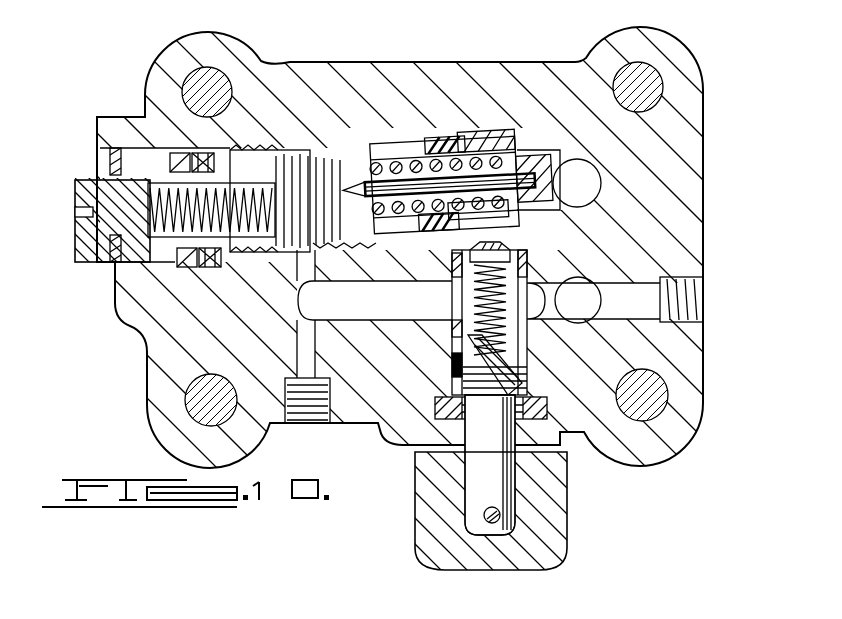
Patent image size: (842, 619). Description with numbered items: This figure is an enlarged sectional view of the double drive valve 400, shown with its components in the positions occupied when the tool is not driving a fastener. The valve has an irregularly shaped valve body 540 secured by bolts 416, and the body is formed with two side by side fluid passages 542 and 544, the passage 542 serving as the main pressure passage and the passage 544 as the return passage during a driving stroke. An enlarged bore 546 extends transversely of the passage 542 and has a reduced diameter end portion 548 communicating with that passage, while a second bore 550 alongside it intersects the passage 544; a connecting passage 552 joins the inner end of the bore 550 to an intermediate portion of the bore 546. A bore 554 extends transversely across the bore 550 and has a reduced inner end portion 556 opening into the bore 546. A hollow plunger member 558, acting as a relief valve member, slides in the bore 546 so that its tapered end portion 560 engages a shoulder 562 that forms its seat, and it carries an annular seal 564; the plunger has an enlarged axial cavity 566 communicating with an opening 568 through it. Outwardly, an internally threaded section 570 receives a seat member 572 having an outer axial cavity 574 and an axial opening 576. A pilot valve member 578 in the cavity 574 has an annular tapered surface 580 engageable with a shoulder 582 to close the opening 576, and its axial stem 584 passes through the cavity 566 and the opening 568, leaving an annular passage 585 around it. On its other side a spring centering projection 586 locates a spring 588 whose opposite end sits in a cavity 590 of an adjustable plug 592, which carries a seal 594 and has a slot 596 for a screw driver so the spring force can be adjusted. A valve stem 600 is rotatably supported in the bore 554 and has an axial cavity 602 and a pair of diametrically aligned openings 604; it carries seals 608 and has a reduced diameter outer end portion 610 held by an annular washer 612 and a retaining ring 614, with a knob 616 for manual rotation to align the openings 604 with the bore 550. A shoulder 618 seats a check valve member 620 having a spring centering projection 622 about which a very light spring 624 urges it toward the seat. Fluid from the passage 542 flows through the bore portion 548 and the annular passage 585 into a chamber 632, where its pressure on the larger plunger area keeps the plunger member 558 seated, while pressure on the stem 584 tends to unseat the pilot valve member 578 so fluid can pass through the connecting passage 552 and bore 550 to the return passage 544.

The double drive valve 400 is at (128, 374).
The bolts 416 is at (233, 60).
The valve body 540 is at (700, 190).
The fluid passage 542 is at (602, 183).
The fluid passage 544 is at (606, 297).
The enlarged bore 546 is at (415, 145).
The reduced diameter end portion 548 is at (552, 155).
The second bore 550 is at (630, 278).
The connecting passage 552 is at (298, 317).
The bore 554 is at (452, 343).
The reduced inner end portion 556 is at (523, 227).
The hollow plunger member 558 is at (483, 133).
The tapered end portion 560 is at (493, 135).
The shoulder 562 is at (542, 145).
The annular seal 564 is at (455, 147).
The enlarged axial cavity 566 is at (337, 270).
The opening 568 is at (577, 183).
The internally threaded section 570 is at (288, 165).
The seat member 572 is at (336, 185).
The outer axial cavity 574 is at (235, 270).
The axial opening 576 is at (385, 150).
The pilot valve member 578 is at (376, 172).
The annular tapered surface 580 is at (431, 240).
The shoulder 582 is at (313, 283).
The axial stem 584 is at (478, 210).
The annular passage 585 is at (633, 152).
The spring centering projection 586 is at (236, 250).
The spring 588 is at (190, 214).
The cavity 590 is at (234, 170).
The adjustable plug 592 is at (198, 152).
The seal 594 is at (125, 265).
The slot 596 is at (80, 205).
The valve stem 600 is at (527, 358).
The axial cavity 602 is at (578, 300).
The openings 604 is at (462, 312).
The seals 608 is at (455, 360).
The reduced diameter outer end portion 610 is at (505, 490).
The annular washer 612 is at (527, 393).
The retaining ring 614 is at (547, 410).
The knob 616 is at (562, 523).
The shoulder 618 is at (520, 252).
The check valve member 620 is at (533, 262).
The spring centering projection 622 is at (472, 286).
The spring 624 is at (525, 340).
The chamber 632 is at (467, 253).